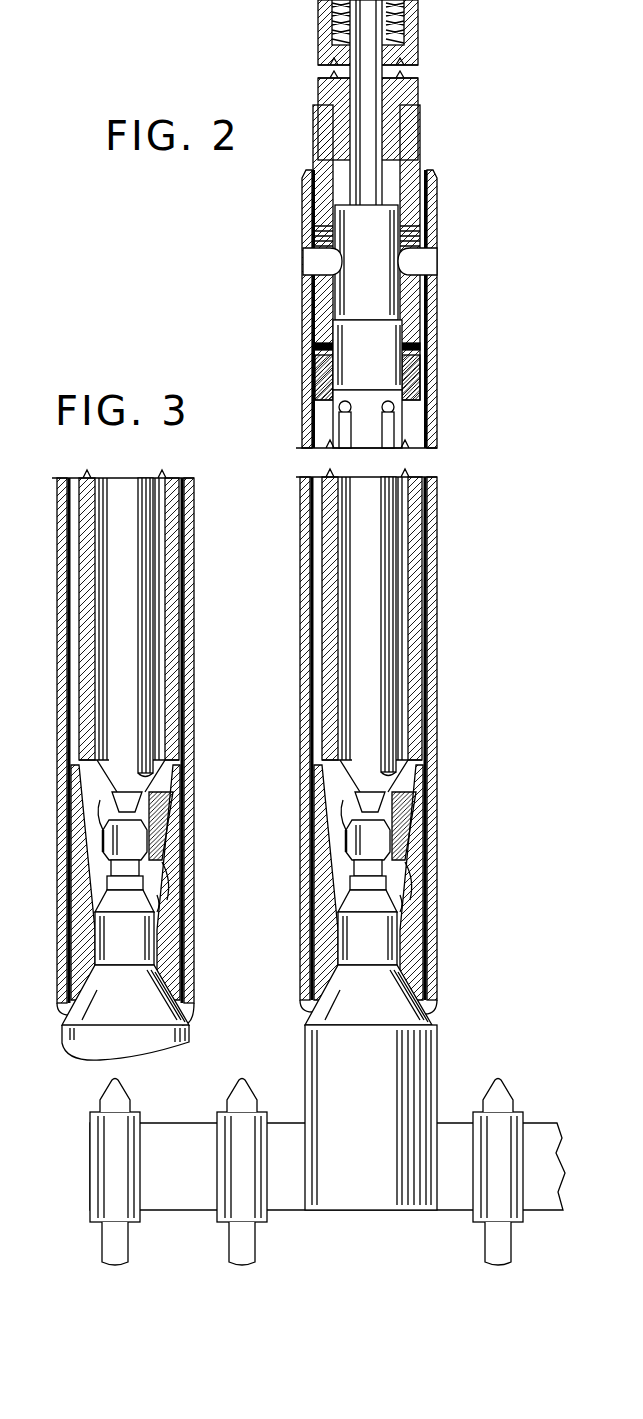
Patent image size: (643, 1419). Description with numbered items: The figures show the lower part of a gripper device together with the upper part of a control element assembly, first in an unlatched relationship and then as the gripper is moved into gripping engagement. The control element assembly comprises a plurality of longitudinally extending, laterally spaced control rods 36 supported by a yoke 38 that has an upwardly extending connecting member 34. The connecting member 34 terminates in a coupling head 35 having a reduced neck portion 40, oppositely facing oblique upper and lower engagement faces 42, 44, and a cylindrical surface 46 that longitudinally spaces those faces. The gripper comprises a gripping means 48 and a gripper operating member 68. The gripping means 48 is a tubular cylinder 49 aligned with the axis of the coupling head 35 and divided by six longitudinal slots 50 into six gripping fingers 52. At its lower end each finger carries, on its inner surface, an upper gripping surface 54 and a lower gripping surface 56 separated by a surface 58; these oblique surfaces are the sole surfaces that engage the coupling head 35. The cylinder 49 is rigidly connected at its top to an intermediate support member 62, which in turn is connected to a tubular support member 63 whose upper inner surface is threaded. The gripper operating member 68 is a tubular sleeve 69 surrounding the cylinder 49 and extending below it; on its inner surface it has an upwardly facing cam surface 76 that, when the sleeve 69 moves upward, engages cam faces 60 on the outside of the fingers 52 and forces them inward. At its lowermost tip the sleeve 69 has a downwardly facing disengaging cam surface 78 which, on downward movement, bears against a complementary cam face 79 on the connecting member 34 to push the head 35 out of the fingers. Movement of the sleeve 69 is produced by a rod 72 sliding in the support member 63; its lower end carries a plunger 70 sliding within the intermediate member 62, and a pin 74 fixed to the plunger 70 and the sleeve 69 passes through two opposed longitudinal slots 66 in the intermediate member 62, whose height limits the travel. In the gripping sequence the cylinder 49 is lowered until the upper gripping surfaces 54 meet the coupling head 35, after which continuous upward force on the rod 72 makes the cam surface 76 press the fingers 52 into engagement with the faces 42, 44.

In FIG. 2, the connecting member 34 is at (438, 1070).
In FIG. 2, the coupling head 35 is at (412, 935).
In FIG. 3, the coupling head 35 is at (168, 941).
In FIG. 2, the control rods 36 is at (130, 1240).
In FIG. 2, the yoke 38 is at (540, 1123).
In FIG. 2, the reduced neck portion 40 is at (368, 883).
In FIG. 3, the reduced neck portion 40 is at (122, 883).
In FIG. 2, the upper engagement face 42 is at (357, 820).
In FIG. 3, the upper engagement face 42 is at (110, 820).
In FIG. 2, the lower engagement face 44 is at (357, 870).
In FIG. 3, the lower engagement face 44 is at (112, 870).
In FIG. 2, the cylindrical surface 46 is at (385, 840).
In FIG. 3, the cylindrical surface 46 is at (142, 845).
In FIG. 2, the gripping means 48 is at (342, 428).
In FIG. 2, the tubular cylinder 49 is at (395, 432).
In FIG. 2, the longitudinal slots 50 is at (393, 508).
In FIG. 3, the longitudinal slots 50 is at (150, 508).
In FIG. 2, the gripping fingers 52 is at (335, 550).
In FIG. 3, the gripping fingers 52 is at (92, 550).
In FIG. 2, the upper gripping surface 54 is at (385, 805).
In FIG. 3, the upper gripping surface 54 is at (142, 808).
In FIG. 2, the lower gripping surface 56 is at (398, 850).
In FIG. 3, the lower gripping surface 56 is at (155, 868).
In FIG. 2, the separation surface 58 is at (345, 818).
In FIG. 3, the separation surface 58 is at (100, 840).
In FIG. 2, the cam faces 60 is at (415, 878).
In FIG. 3, the cam faces 60 is at (170, 905).
In FIG. 2, the intermediate support member 62 is at (415, 168).
In FIG. 2, the tubular support member 63 is at (405, 95).
In FIG. 2, the longitudinal slots 66 is at (322, 236).
In FIG. 2, the gripper operating member 68 is at (294, 318).
In FIG. 2, the tubular sleeve 69 is at (310, 355).
In FIG. 3, the tubular sleeve 69 is at (62, 626).
In FIG. 2, the plunger 70 is at (345, 222).
In FIG. 2, the rod 72 is at (372, 48).
In FIG. 2, the pin 74 is at (318, 262).
In FIG. 2, the cam surface 76 is at (405, 900).
In FIG. 3, the cam surface 76 is at (160, 918).
In FIG. 2, the disengaging cam surface 78 is at (338, 985).
In FIG. 3, the disengaging cam surface 78 is at (95, 985).
In FIG. 2, the complementary cam face 79 is at (327, 1012).
In FIG. 3, the complementary cam face 79 is at (78, 1012).